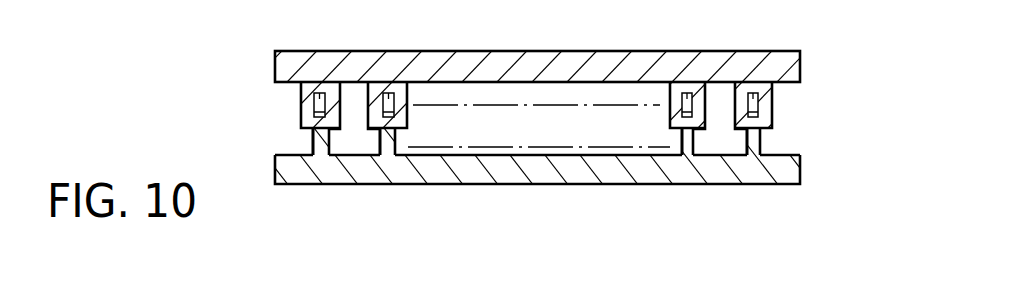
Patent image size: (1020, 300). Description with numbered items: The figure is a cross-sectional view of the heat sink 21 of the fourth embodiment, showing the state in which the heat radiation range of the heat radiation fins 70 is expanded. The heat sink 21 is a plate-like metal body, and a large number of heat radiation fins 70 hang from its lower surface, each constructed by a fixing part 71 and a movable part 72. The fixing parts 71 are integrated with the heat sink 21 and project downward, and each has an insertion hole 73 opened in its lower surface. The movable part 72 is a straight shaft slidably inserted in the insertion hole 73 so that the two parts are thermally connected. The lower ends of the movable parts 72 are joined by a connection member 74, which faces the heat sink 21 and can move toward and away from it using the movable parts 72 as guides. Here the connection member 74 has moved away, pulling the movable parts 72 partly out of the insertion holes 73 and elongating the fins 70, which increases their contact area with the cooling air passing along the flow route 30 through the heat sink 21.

The heat sink 21 is at (566, 60).
The flow route 30 is at (494, 123).
The heat radiation fins 70 is at (527, 87).
The fixing part 71 is at (314, 95).
The movable part 72 is at (313, 140).
The insertion hole 73 is at (388, 93).
The connection member 74 is at (763, 174).